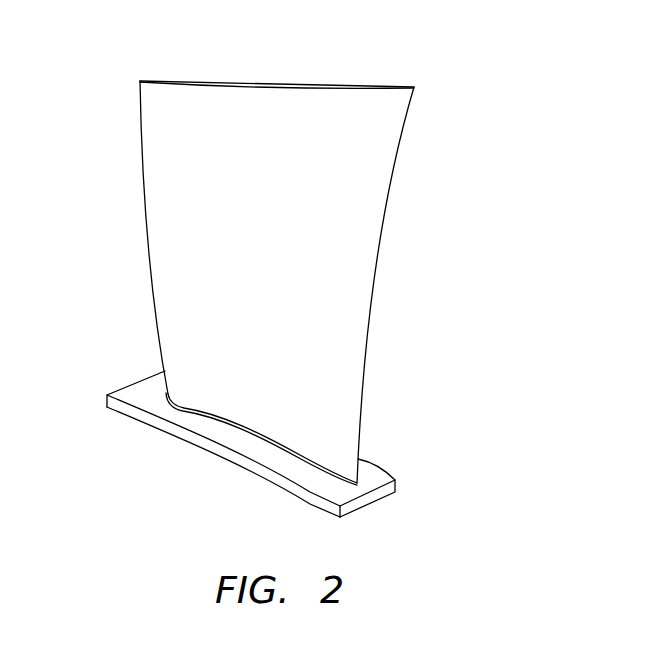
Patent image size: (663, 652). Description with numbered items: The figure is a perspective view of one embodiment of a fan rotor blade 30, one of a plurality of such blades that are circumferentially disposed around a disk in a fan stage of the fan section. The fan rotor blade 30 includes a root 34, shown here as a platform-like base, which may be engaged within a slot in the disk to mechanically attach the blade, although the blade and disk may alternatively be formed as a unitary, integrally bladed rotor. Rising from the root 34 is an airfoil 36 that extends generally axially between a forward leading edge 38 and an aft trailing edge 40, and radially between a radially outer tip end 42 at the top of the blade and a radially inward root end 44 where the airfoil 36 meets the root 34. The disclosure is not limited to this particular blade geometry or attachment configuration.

The fan rotor blade 30 is at (424, 262).
The root 34 is at (160, 427).
The airfoil 36 is at (258, 234).
The leading edge 38 is at (397, 162).
The trailing edge 40 is at (143, 207).
The tip end 42 is at (323, 83).
The root end 44 is at (302, 459).